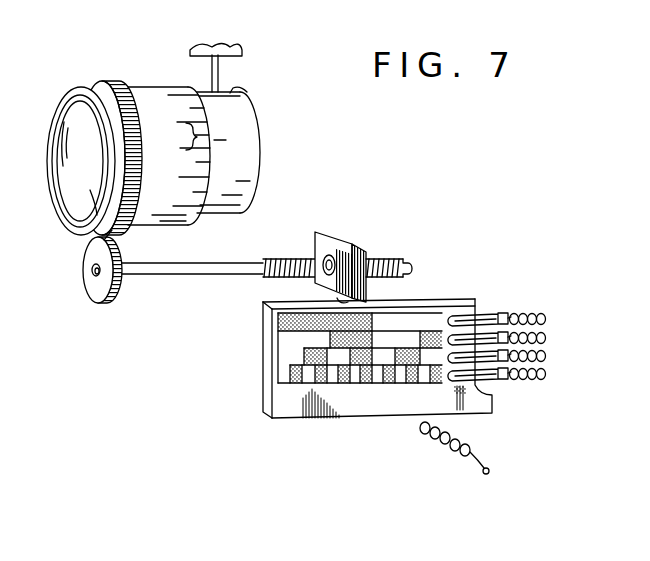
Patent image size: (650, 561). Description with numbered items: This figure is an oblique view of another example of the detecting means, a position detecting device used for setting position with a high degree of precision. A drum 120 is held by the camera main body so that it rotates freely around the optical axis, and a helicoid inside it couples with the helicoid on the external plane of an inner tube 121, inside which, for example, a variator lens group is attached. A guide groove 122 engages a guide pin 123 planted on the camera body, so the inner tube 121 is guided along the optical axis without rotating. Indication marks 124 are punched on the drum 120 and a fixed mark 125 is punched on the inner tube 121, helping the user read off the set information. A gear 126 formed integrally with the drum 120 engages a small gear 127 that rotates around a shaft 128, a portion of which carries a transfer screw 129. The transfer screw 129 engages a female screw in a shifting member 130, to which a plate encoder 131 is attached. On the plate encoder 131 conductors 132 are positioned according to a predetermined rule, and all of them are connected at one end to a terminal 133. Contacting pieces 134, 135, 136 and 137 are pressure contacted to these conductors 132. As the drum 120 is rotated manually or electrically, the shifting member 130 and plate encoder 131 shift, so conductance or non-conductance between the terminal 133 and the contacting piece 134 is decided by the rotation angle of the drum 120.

The drum 120 is at (146, 94).
The inner tube 121 is at (256, 126).
The guide groove 122 is at (243, 91).
The guide pin 123 is at (217, 74).
The indication marks 124 is at (180, 150).
The fixed mark 125 is at (220, 139).
The gear 126 is at (103, 83).
The small gear 127 is at (101, 291).
The shaft 128 is at (199, 264).
The transfer screw 129 is at (292, 259).
The shifting member 130 is at (350, 238).
The plate encoder 131 is at (266, 397).
The conductors 132 is at (404, 352).
The terminal 133 is at (486, 474).
The contacting piece 134 is at (447, 322).
The contacting piece 135 is at (470, 331).
The contacting piece 136 is at (455, 357).
The contacting piece 137 is at (463, 398).